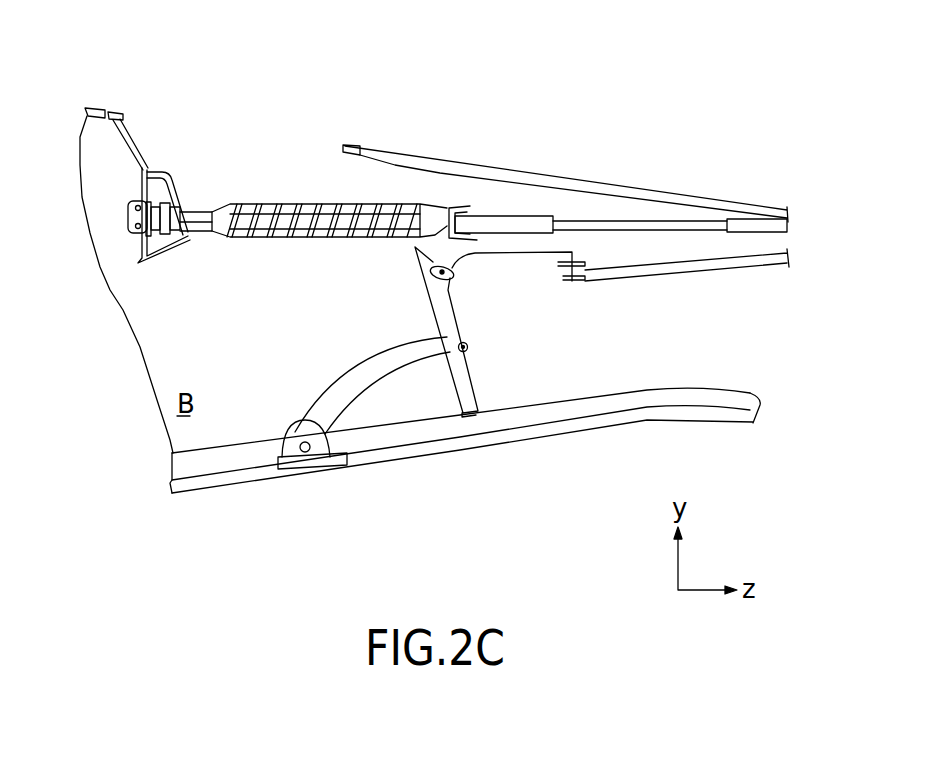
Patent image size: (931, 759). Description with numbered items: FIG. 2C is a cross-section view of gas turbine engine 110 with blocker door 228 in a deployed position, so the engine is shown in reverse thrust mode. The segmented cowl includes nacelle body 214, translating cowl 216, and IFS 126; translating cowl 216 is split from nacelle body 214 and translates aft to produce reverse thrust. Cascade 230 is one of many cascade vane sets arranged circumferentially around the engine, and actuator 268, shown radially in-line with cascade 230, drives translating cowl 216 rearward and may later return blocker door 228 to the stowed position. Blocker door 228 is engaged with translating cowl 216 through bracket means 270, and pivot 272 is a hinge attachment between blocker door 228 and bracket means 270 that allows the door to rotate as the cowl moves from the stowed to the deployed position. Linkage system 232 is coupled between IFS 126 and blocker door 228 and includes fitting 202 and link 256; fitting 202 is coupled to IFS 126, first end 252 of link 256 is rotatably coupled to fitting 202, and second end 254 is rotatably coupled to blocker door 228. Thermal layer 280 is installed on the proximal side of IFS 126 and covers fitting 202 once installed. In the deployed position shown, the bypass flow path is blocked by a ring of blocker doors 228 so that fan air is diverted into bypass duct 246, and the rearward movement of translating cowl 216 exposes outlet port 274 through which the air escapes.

The gas turbine engine 110 is at (541, 125).
The IFS 126 is at (220, 478).
The fitting arrangement 202 is at (309, 484).
The nacelle body 214 is at (93, 108).
The translating cowl 216 is at (464, 167).
The blocker door 228 is at (437, 306).
The cascade 230 is at (309, 182).
The linkage system 232 is at (327, 389).
The bypass duct 246 is at (249, 171).
The first end 252 is at (276, 422).
The second end 254 is at (483, 356).
The link 256 is at (370, 364).
The actuator 268 is at (119, 182).
The bracket means 270 is at (573, 283).
The pivot 272 is at (450, 276).
The outlet port 274 is at (270, 126).
The thermal layer 280 is at (407, 453).